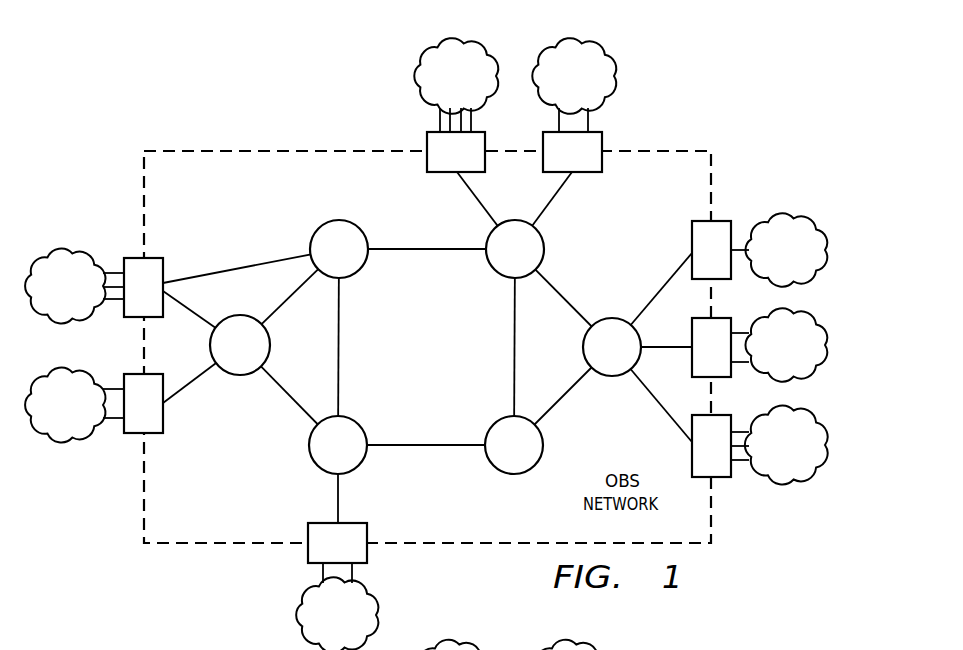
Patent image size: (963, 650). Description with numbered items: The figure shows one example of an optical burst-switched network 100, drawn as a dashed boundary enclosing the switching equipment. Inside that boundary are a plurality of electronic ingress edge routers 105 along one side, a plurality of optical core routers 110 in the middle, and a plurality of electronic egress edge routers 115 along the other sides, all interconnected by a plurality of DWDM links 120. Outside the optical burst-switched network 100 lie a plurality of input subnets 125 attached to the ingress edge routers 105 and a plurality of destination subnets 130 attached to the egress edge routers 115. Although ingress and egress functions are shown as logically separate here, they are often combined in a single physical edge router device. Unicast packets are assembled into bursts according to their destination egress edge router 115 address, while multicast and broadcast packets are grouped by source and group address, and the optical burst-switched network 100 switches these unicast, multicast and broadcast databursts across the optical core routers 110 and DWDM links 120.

The optical burst-switched network 100 is at (140, 103).
The electronic ingress edge router 105 is at (130, 258).
The optical core router 110 is at (544, 249).
The electronic egress edge router 115 is at (427, 134).
The DWDM link 120 is at (413, 248).
The input subnet 125 is at (62, 253).
The destination subnet 130 is at (607, 41).